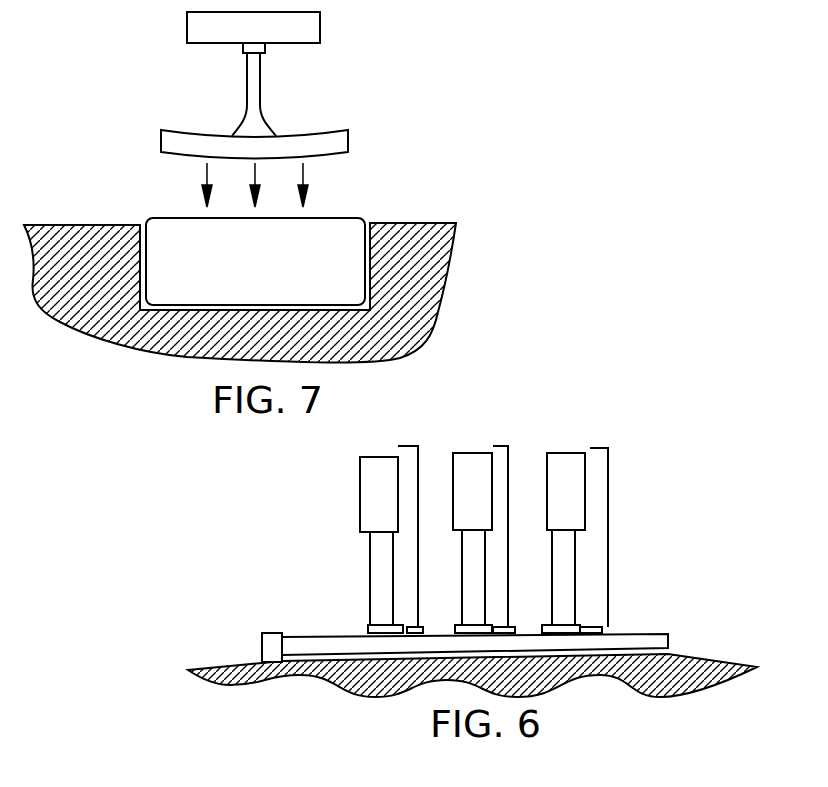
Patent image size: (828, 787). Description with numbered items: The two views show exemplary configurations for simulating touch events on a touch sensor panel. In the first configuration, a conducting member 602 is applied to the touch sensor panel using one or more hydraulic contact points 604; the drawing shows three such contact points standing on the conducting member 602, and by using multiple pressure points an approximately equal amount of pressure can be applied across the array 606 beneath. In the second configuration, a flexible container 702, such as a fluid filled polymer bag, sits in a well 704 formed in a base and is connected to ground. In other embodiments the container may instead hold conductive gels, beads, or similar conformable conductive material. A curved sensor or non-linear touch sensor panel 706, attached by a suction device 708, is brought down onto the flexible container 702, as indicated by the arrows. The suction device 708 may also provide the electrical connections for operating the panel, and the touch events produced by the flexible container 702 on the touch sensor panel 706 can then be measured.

In FIG. 6, the conducting member 602 is at (262, 652).
In FIG. 6, the hydraulic contact points 604 is at (603, 620).
In FIG. 6, the array 606 is at (678, 675).
In FIG. 7, the flexible container 702 is at (165, 240).
In FIG. 7, the well 704 is at (370, 307).
In FIG. 7, the curved sensor or non-linear touch sensor panel 706 is at (348, 135).
In FIG. 7, the suction device 708 is at (270, 122).